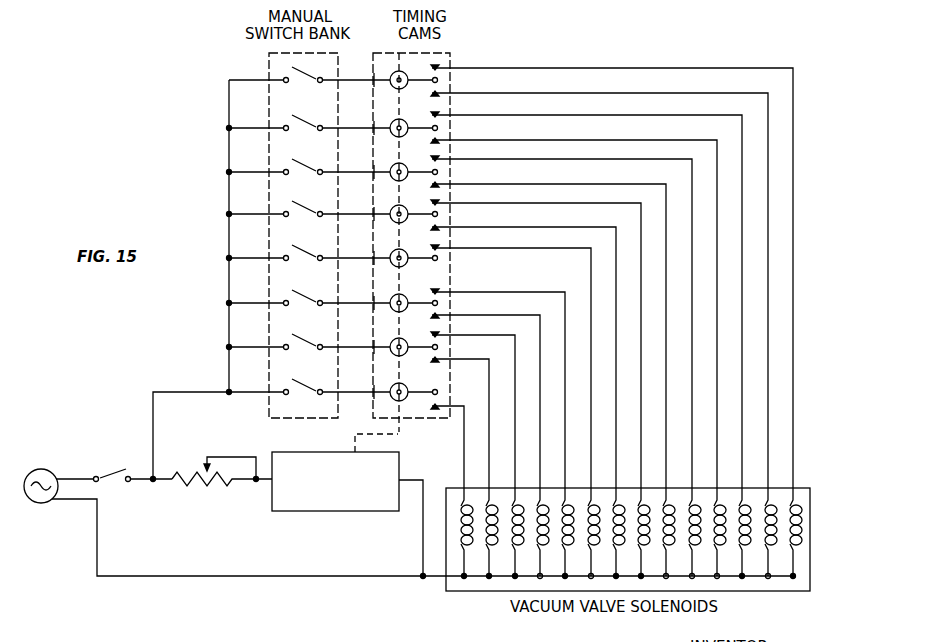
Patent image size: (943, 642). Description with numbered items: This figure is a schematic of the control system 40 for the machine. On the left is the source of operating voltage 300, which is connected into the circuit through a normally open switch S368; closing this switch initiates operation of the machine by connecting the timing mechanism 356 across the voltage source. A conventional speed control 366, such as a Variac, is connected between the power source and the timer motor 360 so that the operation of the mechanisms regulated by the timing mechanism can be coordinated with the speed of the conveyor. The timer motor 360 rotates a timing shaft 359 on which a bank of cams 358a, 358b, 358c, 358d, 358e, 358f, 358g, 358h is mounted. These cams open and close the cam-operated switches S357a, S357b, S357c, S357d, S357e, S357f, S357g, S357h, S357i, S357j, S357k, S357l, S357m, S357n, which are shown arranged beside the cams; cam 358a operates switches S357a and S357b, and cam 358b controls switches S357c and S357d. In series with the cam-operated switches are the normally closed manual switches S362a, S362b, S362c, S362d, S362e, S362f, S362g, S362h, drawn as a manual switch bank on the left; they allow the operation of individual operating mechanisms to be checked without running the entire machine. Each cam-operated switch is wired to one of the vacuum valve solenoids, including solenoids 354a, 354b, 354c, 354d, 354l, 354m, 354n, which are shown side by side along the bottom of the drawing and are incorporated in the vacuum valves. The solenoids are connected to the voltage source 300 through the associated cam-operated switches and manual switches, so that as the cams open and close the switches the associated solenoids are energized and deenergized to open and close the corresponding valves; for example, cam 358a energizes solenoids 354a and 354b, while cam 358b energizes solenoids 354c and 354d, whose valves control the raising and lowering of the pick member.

The control system 40 is at (177, 152).
The power source 300 is at (38, 503).
The normally open switch S368 is at (113, 470).
The speed control 366 is at (185, 472).
The timing mechanism 356 is at (332, 494).
The timer motor 360 is at (318, 511).
The timing shaft 359 is at (399, 428).
The manual switch S362a is at (311, 66).
The manual switch S362b is at (311, 113).
The manual switch S362c is at (311, 156).
The manual switch S362d is at (311, 200).
The manual switch S362e is at (311, 243).
The manual switch S362f is at (311, 286).
The manual switch S362g is at (311, 328).
The manual switch S362h is at (311, 375).
The cam 358a is at (391, 75).
The cam 358b is at (391, 121).
The cam 358c is at (391, 165).
The cam 358d is at (391, 207).
The cam 358e is at (391, 251).
The cam 358f is at (391, 296).
The cam 358g is at (391, 340).
The cam 358h is at (391, 385).
The switch S357a is at (433, 66).
The switch S357b is at (440, 92).
The switch S357c is at (440, 114).
The switch S357d is at (440, 138).
The switch S357e is at (440, 158).
The switch S357f is at (440, 182).
The switch S357g is at (440, 203).
The switch S357h is at (440, 226).
The switch S357i is at (440, 247).
The switch S357j is at (440, 291).
The switch S357k is at (440, 314).
The switch S357l is at (440, 334).
The switch S357m is at (440, 358).
The switch S357n is at (465, 386).
The solenoid 354a is at (796, 512).
The solenoid 354b is at (771, 510).
The solenoid 354c is at (746, 548).
The solenoid 354d is at (720, 548).
The solenoid 354l is at (516, 548).
The solenoid 354m is at (490, 548).
The solenoid 354n is at (465, 548).